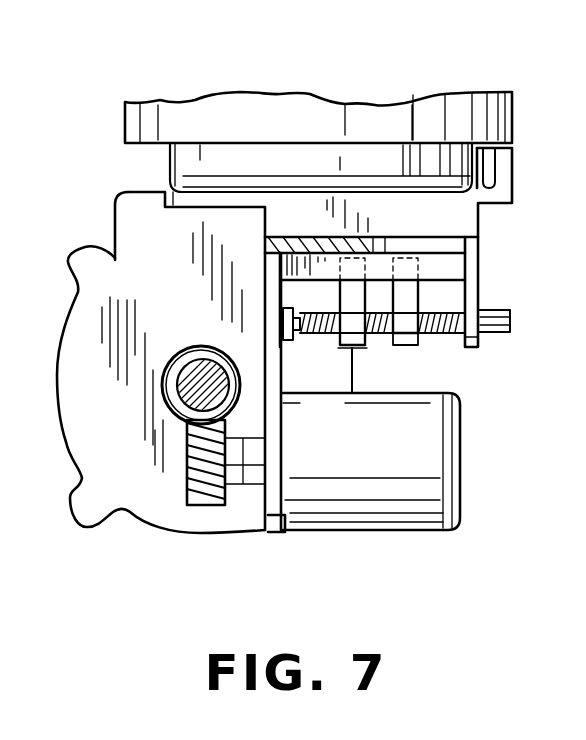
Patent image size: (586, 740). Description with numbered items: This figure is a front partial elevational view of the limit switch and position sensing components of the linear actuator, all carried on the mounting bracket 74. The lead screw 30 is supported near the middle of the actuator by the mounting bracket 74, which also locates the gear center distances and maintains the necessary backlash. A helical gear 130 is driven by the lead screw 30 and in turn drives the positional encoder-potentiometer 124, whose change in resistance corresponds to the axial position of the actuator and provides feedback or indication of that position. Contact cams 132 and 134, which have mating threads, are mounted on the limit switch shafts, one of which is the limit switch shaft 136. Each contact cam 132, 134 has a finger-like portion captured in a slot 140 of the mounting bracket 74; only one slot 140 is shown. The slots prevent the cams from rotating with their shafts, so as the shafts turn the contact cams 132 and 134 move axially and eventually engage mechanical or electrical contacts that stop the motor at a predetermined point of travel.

The mounting bracket 74 is at (392, 197).
The slot 140 is at (446, 242).
The limit switch shaft 136 is at (442, 306).
The contact cam 134 is at (413, 347).
The contact cam 132 is at (358, 341).
The lead screw 30 is at (178, 393).
The helical gear 130 is at (202, 503).
The positional encoder-potentiometer 124 is at (427, 520).